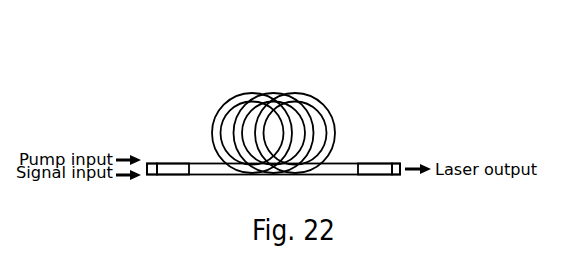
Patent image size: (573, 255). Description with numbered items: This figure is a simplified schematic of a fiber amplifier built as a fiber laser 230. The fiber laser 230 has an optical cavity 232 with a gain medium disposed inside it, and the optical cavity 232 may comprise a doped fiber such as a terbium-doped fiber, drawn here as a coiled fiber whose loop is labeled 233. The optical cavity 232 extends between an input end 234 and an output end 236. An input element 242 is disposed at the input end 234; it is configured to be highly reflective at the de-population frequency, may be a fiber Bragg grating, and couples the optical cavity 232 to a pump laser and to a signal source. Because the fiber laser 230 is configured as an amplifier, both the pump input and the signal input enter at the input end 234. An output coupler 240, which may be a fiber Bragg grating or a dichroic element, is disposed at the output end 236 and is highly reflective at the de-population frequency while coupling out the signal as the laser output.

The fiber laser 230 is at (119, 41).
The optical cavity 232 is at (283, 101).
The fiber loop 233 is at (223, 106).
The input end 234 is at (146, 164).
The input element 242 is at (173, 164).
The output coupler 240 is at (377, 164).
The output end 236 is at (401, 164).